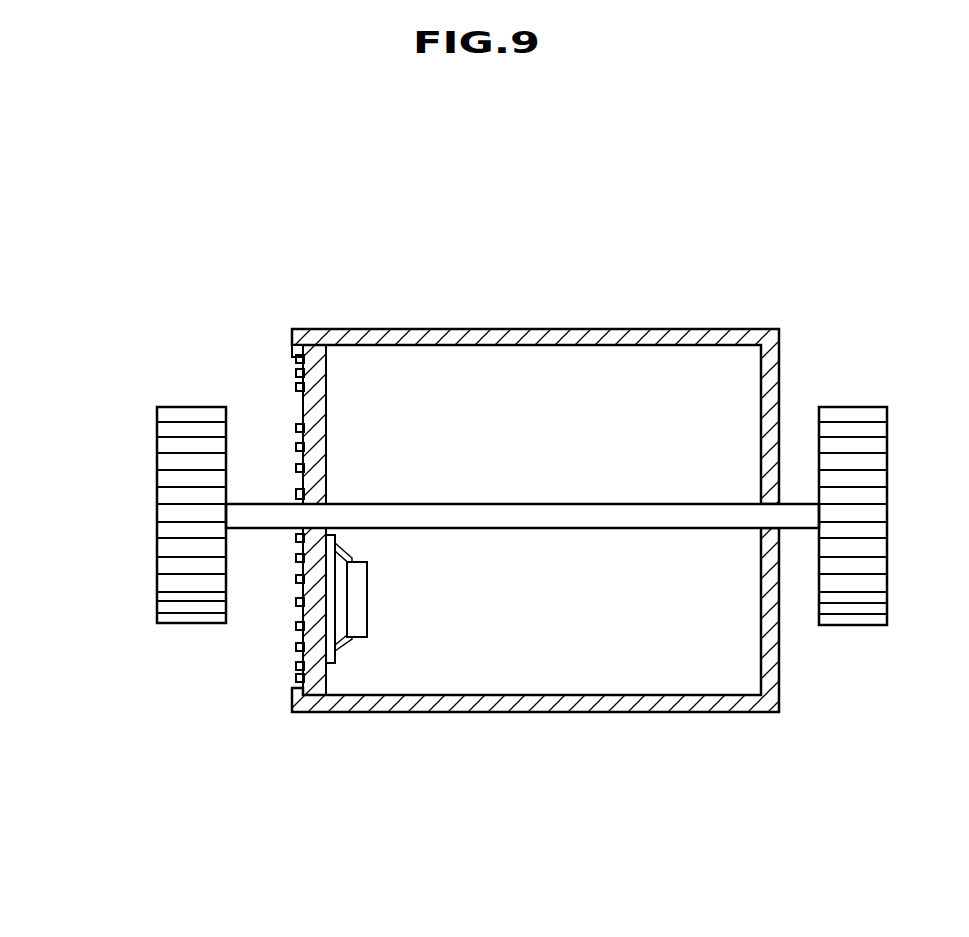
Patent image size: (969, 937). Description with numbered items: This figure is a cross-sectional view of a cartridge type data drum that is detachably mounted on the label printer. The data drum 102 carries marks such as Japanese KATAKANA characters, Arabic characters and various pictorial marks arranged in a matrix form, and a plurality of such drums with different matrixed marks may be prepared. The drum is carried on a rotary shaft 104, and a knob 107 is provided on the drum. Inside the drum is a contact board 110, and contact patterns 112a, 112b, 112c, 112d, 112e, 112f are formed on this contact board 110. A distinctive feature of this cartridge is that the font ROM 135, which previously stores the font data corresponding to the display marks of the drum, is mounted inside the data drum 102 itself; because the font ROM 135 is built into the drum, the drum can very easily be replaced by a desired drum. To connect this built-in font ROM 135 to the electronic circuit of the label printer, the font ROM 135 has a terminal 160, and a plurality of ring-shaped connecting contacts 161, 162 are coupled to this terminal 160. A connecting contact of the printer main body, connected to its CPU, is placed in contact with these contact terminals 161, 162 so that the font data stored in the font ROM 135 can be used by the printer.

The data drum 102 is at (566, 340).
The rotary shaft 104 is at (568, 520).
The knob 107 is at (157, 548).
The contact board 110 is at (317, 356).
The contact pattern 112a is at (304, 389).
The contact pattern 112b is at (297, 626).
The contact pattern 112c is at (304, 428).
The contact pattern 112d is at (304, 447).
The contact pattern 112e is at (304, 468).
The contact pattern 112f is at (297, 494).
The font ROM 135 is at (359, 594).
The terminal 160 is at (356, 551).
The ring-shaped connecting contact 161 is at (296, 371).
The ring-shaped connecting contact 162 is at (297, 358).